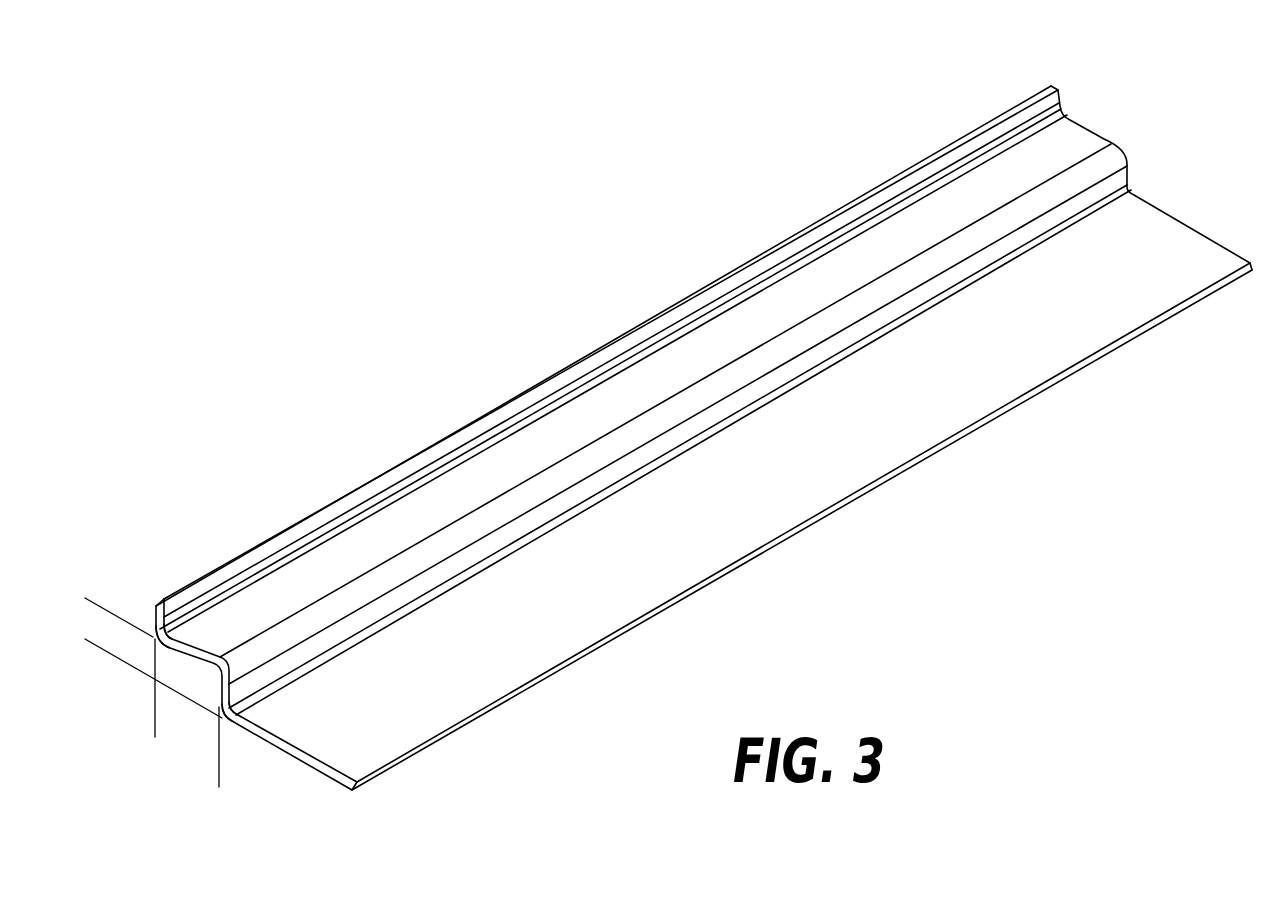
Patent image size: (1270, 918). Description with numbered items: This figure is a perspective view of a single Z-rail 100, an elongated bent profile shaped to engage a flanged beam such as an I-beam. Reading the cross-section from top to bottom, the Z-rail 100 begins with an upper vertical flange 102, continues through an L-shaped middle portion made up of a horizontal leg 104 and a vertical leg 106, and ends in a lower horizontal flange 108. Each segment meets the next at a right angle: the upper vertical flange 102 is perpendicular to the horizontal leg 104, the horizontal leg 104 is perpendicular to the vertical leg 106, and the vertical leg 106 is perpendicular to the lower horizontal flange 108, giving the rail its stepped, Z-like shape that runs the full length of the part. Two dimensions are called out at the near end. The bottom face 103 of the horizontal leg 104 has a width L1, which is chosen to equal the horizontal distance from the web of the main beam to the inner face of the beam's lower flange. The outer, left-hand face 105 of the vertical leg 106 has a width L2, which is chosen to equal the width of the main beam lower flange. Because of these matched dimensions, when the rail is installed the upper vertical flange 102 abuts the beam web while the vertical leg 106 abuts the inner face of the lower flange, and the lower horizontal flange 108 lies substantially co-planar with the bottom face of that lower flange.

The Z-rail 100 is at (696, 423).
The upper vertical flange 102 is at (1058, 97).
The bottom face 103 is at (202, 666).
The horizontal leg 104 is at (1088, 134).
The outer face 105 is at (220, 697).
The vertical leg 106 is at (1122, 179).
The lower horizontal flange 108 is at (1188, 233).
The width L1 is at (216, 769).
The width L2 is at (100, 683).